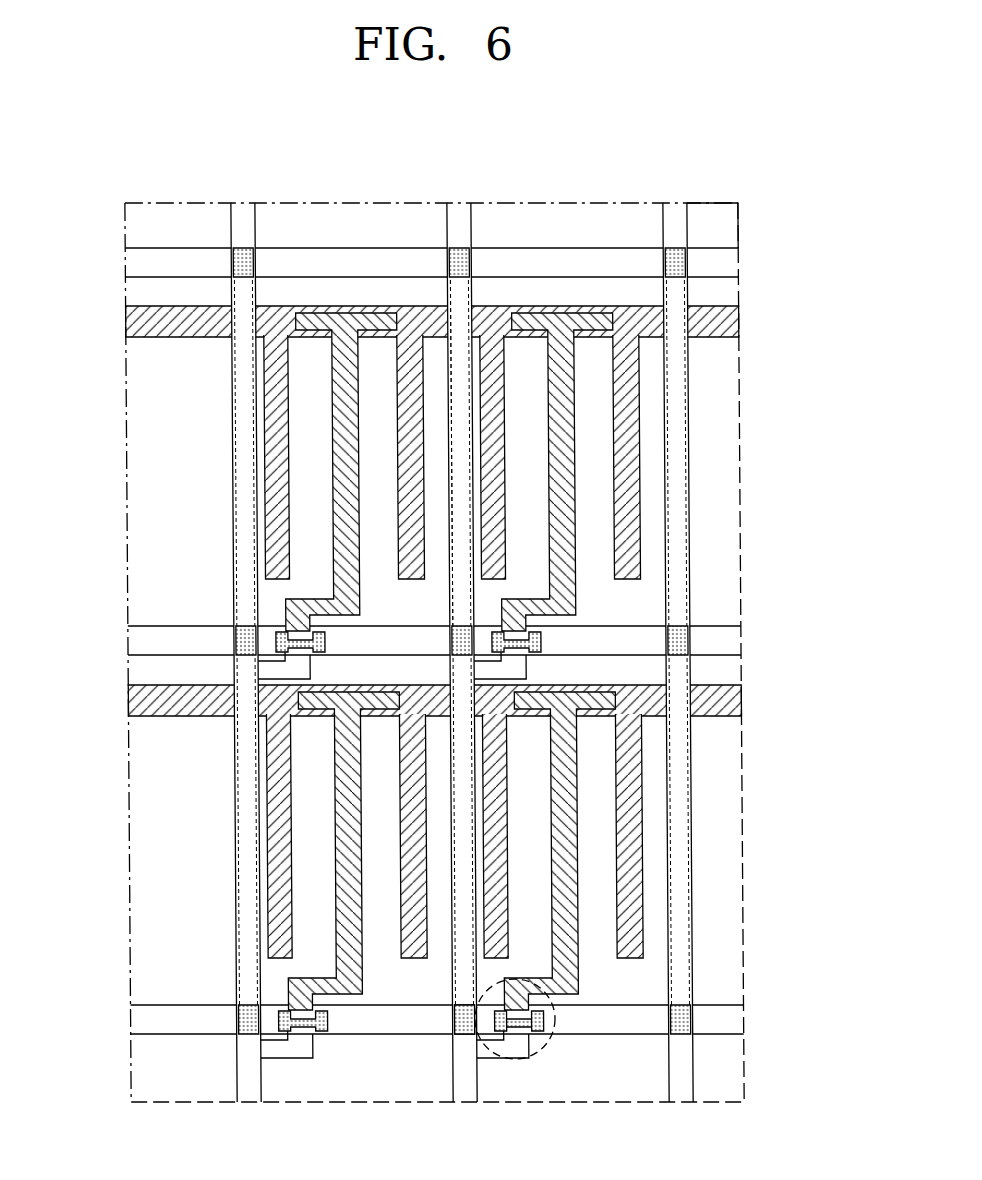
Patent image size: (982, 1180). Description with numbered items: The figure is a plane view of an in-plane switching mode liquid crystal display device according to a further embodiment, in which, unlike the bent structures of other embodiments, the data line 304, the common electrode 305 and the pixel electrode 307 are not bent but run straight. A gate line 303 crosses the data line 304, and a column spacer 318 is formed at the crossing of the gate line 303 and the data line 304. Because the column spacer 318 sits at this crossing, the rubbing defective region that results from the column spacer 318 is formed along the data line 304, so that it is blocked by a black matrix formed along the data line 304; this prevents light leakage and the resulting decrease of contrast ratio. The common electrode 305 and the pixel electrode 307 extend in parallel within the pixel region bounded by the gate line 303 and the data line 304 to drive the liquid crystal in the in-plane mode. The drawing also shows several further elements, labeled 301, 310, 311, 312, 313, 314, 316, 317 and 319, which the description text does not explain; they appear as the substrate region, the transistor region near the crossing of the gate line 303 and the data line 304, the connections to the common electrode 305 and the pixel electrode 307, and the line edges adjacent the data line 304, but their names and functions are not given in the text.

The substrate 301 is at (748, 212).
The gate line 303 is at (723, 638).
The data line 304 is at (460, 222).
The common electrode 305 is at (272, 808).
The pixel electrode 307 is at (345, 878).
The thin film transistor 310 is at (512, 1072).
The drain electrode 311 is at (540, 1032).
The drain contact hole 312 is at (556, 1034).
The active layer 313 is at (503, 1052).
The source electrode 314 is at (492, 1026).
The common line 316 is at (147, 706).
The common electrode connection 317 is at (612, 693).
The column spacer 318 is at (462, 1036).
The passivation layer 319 is at (446, 495).